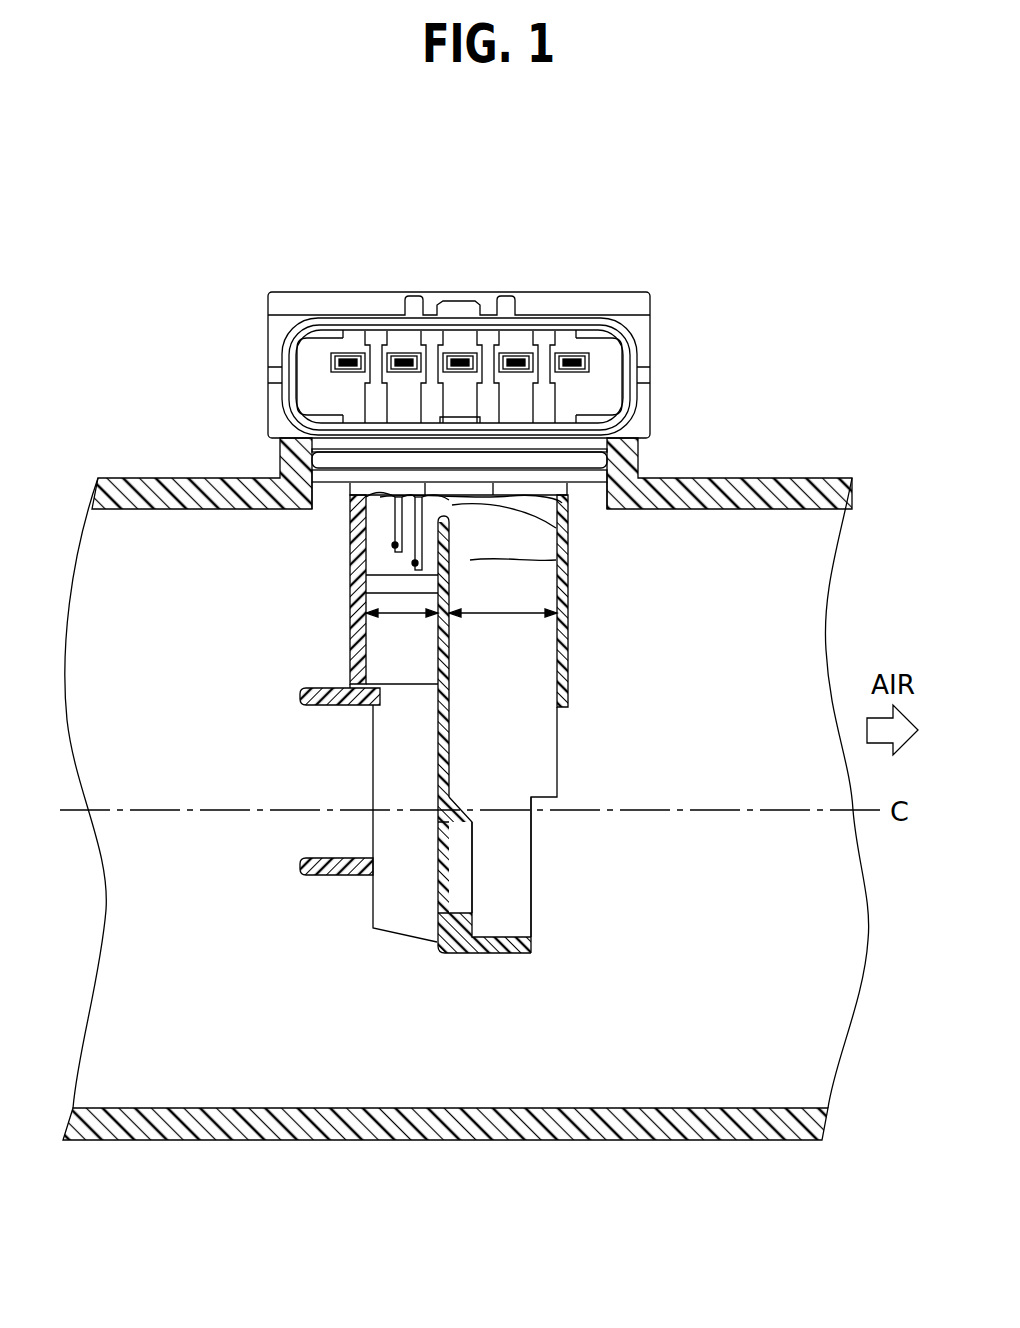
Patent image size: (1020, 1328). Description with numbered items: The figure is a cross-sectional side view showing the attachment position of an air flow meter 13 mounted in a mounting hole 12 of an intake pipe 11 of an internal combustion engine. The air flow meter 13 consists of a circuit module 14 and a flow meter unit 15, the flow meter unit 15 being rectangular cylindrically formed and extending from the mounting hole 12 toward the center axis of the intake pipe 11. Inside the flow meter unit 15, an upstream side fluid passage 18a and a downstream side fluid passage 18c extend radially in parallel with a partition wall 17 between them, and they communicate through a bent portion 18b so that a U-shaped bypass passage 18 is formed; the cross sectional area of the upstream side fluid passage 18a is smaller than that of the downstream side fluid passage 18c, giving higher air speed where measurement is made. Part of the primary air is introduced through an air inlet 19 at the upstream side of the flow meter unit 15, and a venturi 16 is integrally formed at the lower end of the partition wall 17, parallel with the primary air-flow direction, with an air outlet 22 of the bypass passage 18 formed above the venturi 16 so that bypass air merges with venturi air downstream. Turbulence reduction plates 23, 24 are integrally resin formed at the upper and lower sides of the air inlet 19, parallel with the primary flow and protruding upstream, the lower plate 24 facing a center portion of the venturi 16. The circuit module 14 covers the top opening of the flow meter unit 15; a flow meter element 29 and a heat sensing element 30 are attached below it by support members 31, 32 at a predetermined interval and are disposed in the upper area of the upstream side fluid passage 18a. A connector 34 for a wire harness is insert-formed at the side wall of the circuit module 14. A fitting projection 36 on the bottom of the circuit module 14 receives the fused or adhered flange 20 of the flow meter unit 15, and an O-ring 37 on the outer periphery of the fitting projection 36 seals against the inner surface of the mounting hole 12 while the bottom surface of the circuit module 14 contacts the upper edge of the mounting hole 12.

The intake pipe 11 is at (175, 478).
The mounting hole 12 is at (312, 493).
The air flow meter 13 is at (427, 972).
The circuit module 14 is at (568, 292).
The flow meter unit 15 is at (570, 662).
The venturi 16 is at (456, 916).
The partition wall 17 is at (450, 741).
The bypass passage 18 is at (566, 576).
The upstream side fluid passage 18a is at (356, 660).
The bent portion 18b is at (566, 536).
The downstream side fluid passage 18c is at (566, 606).
The air inlet 19 is at (393, 735).
The flange 20 is at (586, 487).
The air outlet 22 is at (532, 778).
The turbulence reduction plate 23 is at (325, 706).
The turbulence reduction plate 24 is at (325, 878).
The flow meter element 29 is at (380, 592).
The heat sensing element 30 is at (414, 558).
The support member 31 is at (426, 499).
The support member 32 is at (394, 514).
The connector 34 is at (636, 322).
The fitting projection 36 is at (606, 456).
The O-ring 37 is at (606, 472).